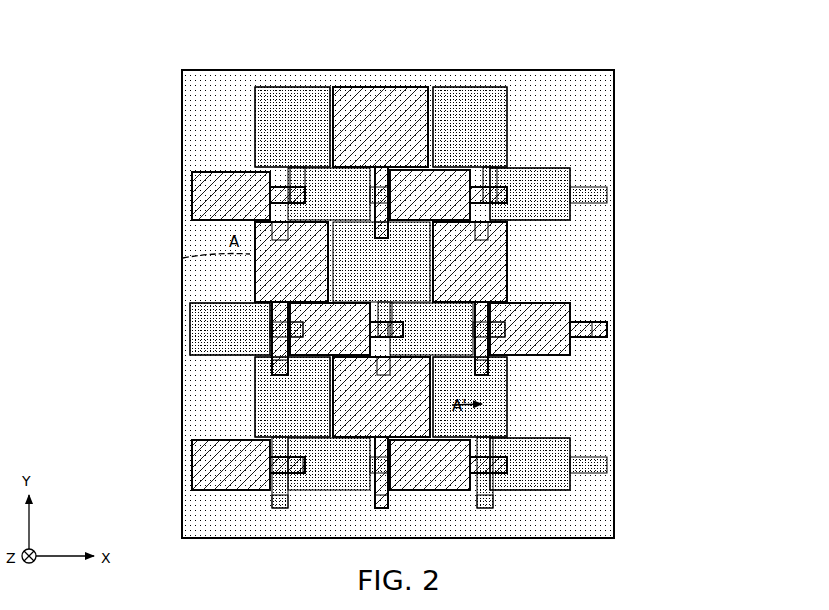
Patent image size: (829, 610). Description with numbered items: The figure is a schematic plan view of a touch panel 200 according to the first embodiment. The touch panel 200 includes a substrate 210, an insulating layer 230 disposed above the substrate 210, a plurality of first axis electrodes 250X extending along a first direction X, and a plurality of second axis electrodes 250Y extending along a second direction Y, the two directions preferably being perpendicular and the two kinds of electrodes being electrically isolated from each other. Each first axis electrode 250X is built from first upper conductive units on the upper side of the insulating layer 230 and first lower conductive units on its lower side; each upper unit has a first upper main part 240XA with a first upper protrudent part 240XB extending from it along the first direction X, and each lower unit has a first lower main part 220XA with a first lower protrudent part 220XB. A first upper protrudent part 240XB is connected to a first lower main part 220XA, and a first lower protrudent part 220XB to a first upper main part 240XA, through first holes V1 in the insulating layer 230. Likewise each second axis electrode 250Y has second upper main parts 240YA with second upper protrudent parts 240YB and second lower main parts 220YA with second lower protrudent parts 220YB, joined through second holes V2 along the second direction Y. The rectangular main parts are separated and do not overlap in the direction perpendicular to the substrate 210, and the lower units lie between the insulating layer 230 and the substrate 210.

The touch panel 200 is at (627, 52).
The substrate 210 is at (614, 390).
The insulating layer 230 is at (585, 428).
The second lower main part 220YA is at (490, 118).
The second lower protrudent part 220YB is at (497, 162).
The first lower main part 220XA is at (533, 182).
The first lower protrudent part 220XB is at (586, 205).
The second upper main part 240YA is at (500, 250).
The second upper protrudent part 240YB is at (492, 290).
The first upper main part 240XA is at (235, 183).
The first upper protrudent part 240XB is at (283, 162).
The first axis electrode 250X is at (172, 170).
The second axis electrode 250Y is at (330, 57).
The first hole V1 is at (287, 186).
The second hole V2 is at (268, 240).